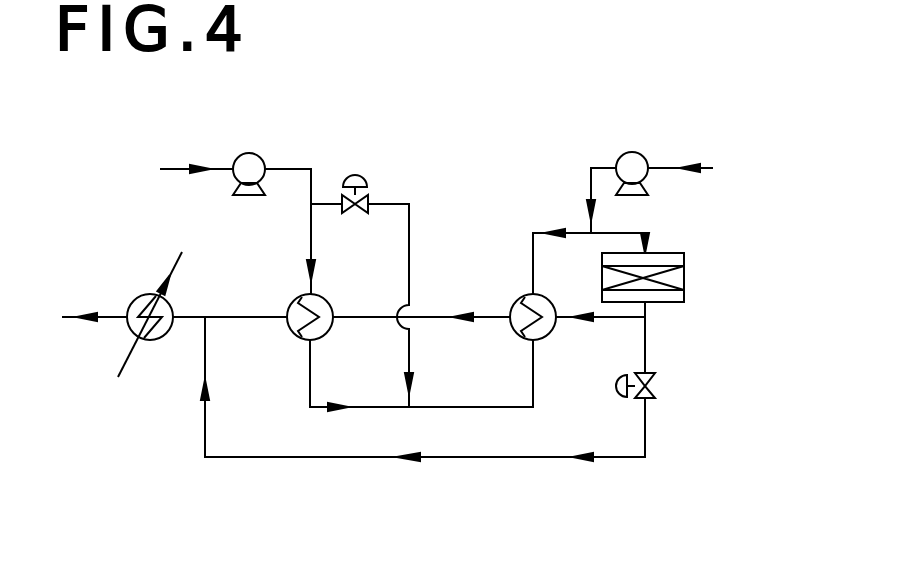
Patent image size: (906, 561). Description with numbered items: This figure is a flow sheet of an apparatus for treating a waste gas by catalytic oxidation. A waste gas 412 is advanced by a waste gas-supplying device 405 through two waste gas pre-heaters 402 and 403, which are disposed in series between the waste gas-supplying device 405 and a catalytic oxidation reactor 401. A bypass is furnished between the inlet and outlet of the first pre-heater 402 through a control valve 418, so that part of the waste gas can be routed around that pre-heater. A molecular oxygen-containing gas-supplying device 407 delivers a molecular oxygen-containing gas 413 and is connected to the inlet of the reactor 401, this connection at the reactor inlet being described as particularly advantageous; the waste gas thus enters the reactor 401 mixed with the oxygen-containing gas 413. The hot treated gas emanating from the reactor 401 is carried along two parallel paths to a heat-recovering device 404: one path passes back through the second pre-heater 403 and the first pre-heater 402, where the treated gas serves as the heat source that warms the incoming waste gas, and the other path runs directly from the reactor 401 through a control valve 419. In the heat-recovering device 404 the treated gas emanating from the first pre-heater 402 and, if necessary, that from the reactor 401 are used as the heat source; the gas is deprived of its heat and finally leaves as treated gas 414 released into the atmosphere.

The catalytic oxidation reactor 401 is at (676, 252).
The first waste gas pre-heater 402 is at (330, 295).
The second waste gas pre-heater 403 is at (513, 295).
The heat-recovering device 404 is at (130, 300).
The waste gas-supplying device 405 is at (250, 153).
The molecular oxygen-containing gas-supplying device 407 is at (630, 152).
The waste gas 412 is at (170, 169).
The molecular oxygen-containing gas 413 is at (712, 168).
The treated gas 414 is at (69, 318).
The control valve 418 is at (352, 176).
The control valve 419 is at (657, 386).